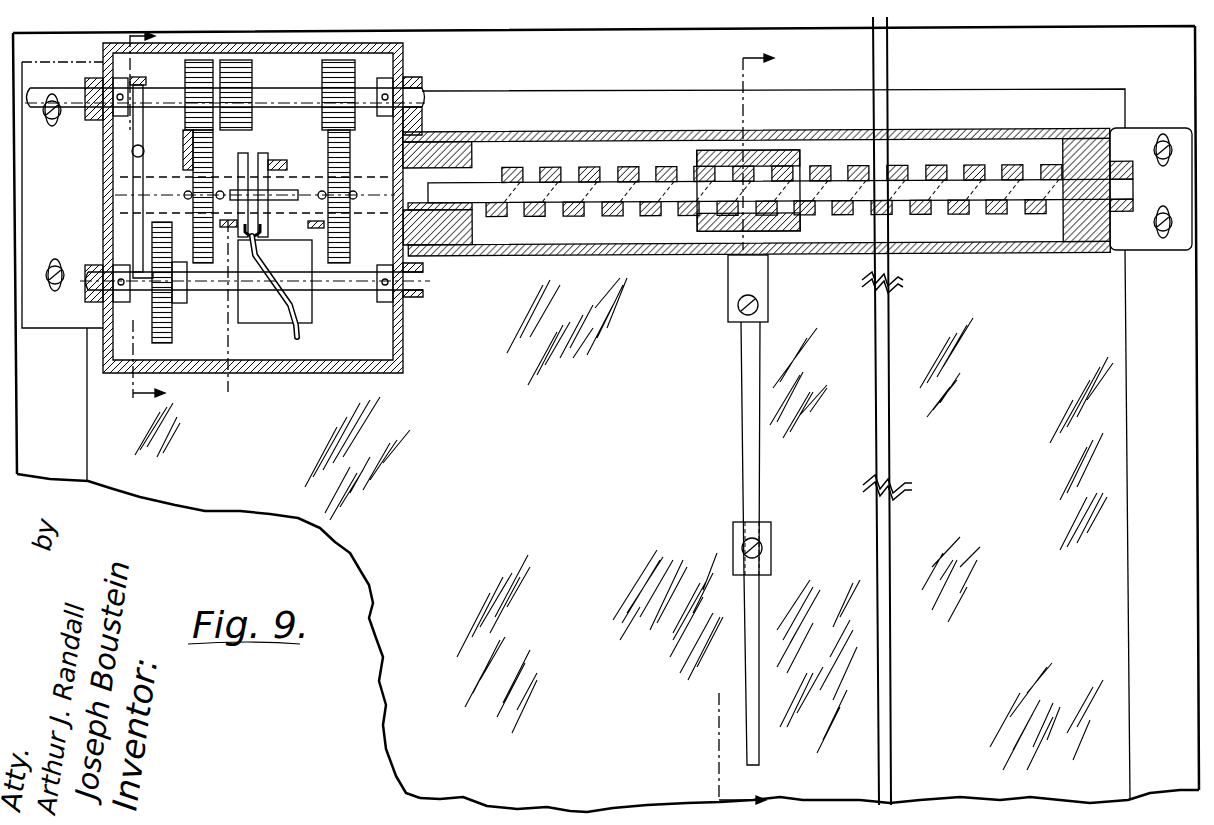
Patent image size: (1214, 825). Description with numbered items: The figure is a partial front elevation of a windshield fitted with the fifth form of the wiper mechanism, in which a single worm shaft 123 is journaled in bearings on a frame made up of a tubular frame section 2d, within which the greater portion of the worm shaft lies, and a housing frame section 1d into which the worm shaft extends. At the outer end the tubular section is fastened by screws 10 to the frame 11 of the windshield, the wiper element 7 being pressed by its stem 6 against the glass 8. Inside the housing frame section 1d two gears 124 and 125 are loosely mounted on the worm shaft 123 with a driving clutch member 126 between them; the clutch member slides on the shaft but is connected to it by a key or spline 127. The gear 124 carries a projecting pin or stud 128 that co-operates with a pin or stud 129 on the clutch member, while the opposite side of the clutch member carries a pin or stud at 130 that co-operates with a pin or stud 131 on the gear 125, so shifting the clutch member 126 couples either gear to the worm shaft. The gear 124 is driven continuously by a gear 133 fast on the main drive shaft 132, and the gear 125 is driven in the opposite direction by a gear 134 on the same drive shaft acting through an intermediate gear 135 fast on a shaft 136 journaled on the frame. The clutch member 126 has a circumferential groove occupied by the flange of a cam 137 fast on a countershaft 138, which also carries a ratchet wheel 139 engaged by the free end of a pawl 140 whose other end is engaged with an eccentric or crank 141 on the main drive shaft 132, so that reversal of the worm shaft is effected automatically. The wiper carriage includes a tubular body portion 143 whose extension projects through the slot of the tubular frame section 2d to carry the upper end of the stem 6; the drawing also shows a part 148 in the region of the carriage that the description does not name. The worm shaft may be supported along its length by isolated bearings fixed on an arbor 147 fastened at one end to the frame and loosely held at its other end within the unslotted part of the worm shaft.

The eccentric or crank 141 is at (102, 52).
The gear 134 is at (227, 78).
The driving clutch member 126 is at (263, 158).
The gear 133 is at (355, 68).
The main drive shaft 132 is at (422, 80).
The shaft 136 is at (422, 135).
The tubular frame section 2d is at (767, 146).
The screws 10 is at (758, 428).
The nut block 148 is at (747, 153).
The intermediate gear 135 is at (150, 130).
The gear 125 is at (187, 172).
The pawl 140 is at (140, 197).
The pin or stud 129 is at (282, 162).
The gear 124 is at (340, 240).
The key or spline 127 is at (323, 223).
The pin or stud 128 is at (276, 281).
The pin or stud 131 is at (230, 230).
The cam 137 is at (303, 323).
The countershaft 138 is at (427, 280).
The worm shaft 123 is at (577, 213).
The tubular body portion 143 is at (717, 230).
The arbor 147 is at (983, 190).
The ratchet wheel 139 is at (160, 310).
The pin or stud 130 is at (236, 319).
The frame of the windshield 11 is at (1148, 566).
The housing frame section 1d is at (405, 366).
The glass 8 is at (608, 545).
The stem 6 is at (753, 407).
The wiper element 7 is at (753, 670).